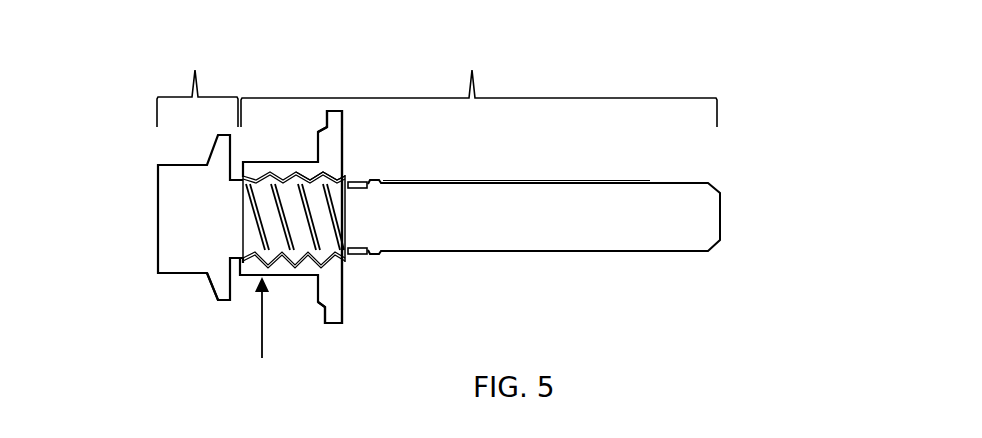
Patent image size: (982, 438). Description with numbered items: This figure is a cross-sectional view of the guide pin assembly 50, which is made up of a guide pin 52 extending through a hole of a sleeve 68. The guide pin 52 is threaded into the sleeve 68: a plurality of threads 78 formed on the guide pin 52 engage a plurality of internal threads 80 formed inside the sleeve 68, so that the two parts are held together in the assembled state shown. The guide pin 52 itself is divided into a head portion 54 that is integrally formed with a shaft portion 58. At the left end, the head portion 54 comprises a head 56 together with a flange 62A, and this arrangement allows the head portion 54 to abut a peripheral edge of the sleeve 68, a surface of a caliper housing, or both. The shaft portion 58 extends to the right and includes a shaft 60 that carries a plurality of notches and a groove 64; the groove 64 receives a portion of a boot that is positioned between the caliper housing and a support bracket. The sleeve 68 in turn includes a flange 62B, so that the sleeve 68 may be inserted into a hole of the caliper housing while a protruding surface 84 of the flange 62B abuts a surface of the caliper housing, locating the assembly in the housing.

The guide pin assembly 50 is at (457, 228).
The guide pin 52 is at (544, 248).
The head portion 54 is at (168, 219).
The head 56 is at (177, 205).
The shaft portion 58 is at (480, 228).
The shaft 60 is at (412, 237).
The flange 62A is at (215, 285).
The flange 62B is at (330, 313).
The groove 64 is at (353, 255).
The sleeve 68 is at (262, 330).
The threads 78 is at (305, 185).
The internal threads 80 is at (318, 180).
The protruding surface 84 is at (317, 297).